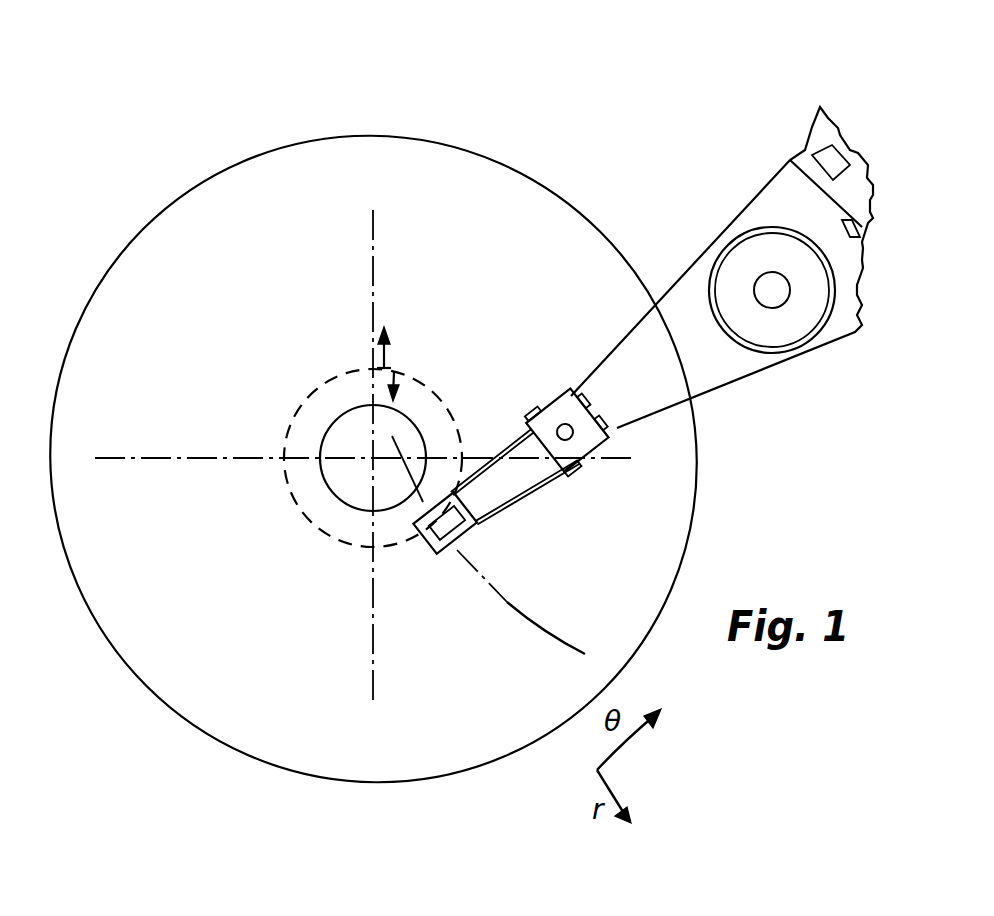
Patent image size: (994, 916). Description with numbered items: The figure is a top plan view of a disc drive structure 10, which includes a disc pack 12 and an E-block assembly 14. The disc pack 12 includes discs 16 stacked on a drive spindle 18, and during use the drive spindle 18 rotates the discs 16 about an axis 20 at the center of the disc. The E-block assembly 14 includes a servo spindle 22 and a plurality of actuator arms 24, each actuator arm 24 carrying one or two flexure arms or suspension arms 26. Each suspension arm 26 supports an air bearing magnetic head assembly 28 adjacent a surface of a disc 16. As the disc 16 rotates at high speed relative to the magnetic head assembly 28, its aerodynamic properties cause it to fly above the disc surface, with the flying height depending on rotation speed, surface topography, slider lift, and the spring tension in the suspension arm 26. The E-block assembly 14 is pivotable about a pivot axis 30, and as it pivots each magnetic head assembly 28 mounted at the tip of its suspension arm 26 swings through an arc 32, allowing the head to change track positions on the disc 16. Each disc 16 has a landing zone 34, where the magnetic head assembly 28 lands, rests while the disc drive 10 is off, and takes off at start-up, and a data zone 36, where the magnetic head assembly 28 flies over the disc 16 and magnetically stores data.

The disc drive structure 10 is at (510, 112).
The disc pack 12 is at (133, 243).
The E-block assembly 14 is at (660, 356).
The disc 16 is at (102, 334).
The drive spindle 18 is at (339, 439).
The axis 20 is at (373, 458).
The servo spindle 22 is at (808, 312).
The actuator arm 24 is at (705, 382).
The suspension arm 26 is at (503, 482).
The air bearing magnetic head assembly 28 is at (430, 544).
The pivot axis 30 is at (775, 290).
The arc 32 is at (527, 613).
The landing zone 34 is at (405, 392).
The data zone 36 is at (399, 345).